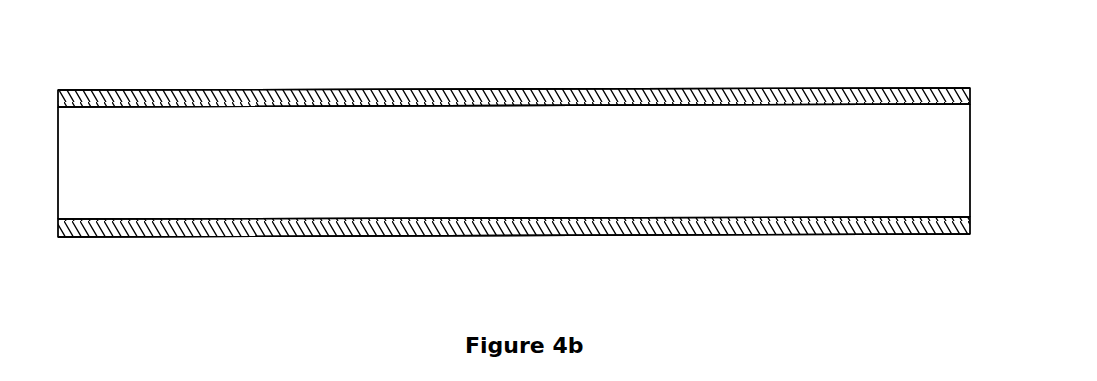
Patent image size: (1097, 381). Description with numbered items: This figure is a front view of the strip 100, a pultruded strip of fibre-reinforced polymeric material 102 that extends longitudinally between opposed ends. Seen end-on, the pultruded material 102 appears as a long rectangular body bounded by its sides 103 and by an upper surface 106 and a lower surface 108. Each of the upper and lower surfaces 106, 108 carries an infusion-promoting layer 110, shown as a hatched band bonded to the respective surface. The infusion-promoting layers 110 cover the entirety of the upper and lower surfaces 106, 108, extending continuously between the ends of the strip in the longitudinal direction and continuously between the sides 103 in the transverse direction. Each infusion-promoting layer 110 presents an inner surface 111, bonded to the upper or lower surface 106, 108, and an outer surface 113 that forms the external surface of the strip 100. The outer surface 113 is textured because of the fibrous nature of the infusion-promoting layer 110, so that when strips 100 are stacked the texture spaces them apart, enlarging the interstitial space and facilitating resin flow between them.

The strip 100 is at (110, 62).
The fibre-reinforced polymeric material 102 is at (523, 181).
The sides 103 is at (58, 162).
The upper surface 106 is at (655, 106).
The lower surface 108 is at (237, 219).
The infusion-promoting layer 110 is at (786, 100).
The inner surface 111 is at (340, 108).
The outer surface 113 is at (582, 88).